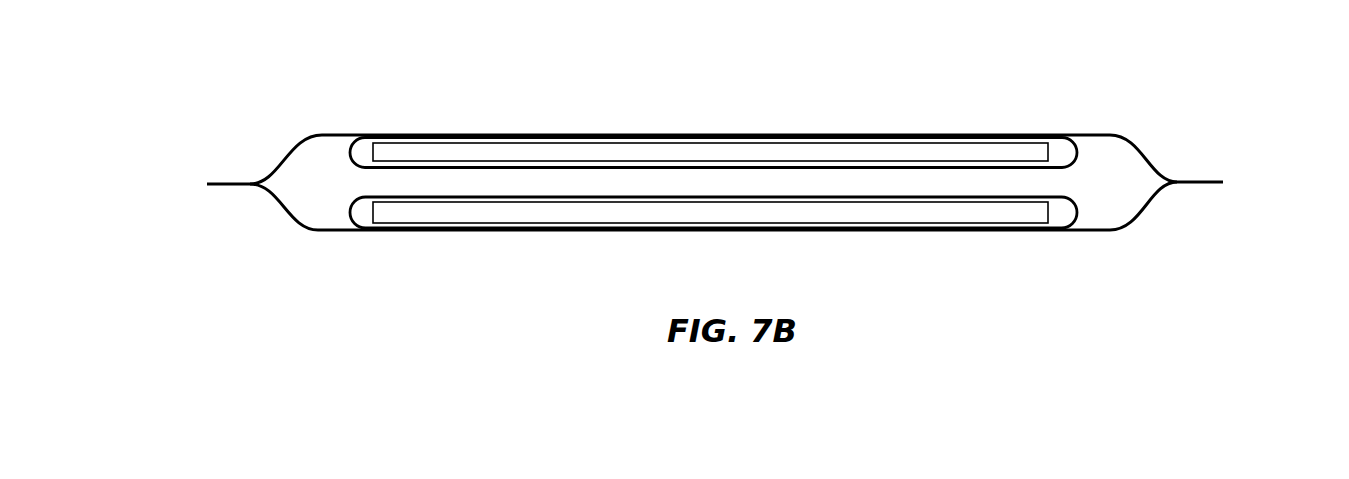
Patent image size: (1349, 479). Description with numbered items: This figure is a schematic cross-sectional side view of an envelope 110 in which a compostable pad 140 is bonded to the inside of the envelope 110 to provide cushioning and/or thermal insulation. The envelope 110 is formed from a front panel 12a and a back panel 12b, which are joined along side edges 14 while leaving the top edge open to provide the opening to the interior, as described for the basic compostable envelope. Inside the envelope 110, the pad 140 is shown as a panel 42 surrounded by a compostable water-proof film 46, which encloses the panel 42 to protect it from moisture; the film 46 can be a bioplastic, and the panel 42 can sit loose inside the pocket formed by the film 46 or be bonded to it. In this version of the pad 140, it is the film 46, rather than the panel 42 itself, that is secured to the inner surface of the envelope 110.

The envelope 110 is at (754, 172).
The side edges 14 is at (232, 183).
The front panel 12a is at (713, 104).
The back panel 12b is at (813, 231).
The panel 42 is at (780, 148).
The compostable water-proof film 46 is at (763, 166).
The compostable pad 140 is at (348, 167).